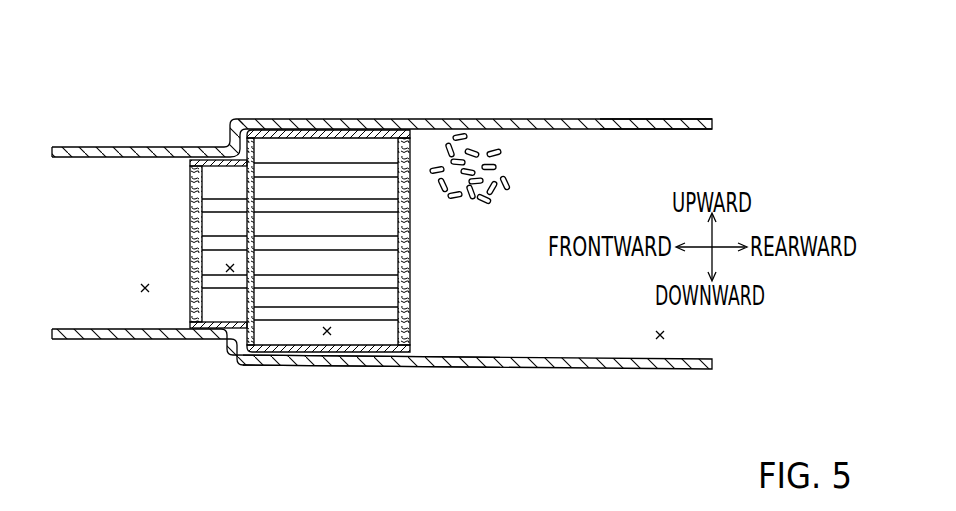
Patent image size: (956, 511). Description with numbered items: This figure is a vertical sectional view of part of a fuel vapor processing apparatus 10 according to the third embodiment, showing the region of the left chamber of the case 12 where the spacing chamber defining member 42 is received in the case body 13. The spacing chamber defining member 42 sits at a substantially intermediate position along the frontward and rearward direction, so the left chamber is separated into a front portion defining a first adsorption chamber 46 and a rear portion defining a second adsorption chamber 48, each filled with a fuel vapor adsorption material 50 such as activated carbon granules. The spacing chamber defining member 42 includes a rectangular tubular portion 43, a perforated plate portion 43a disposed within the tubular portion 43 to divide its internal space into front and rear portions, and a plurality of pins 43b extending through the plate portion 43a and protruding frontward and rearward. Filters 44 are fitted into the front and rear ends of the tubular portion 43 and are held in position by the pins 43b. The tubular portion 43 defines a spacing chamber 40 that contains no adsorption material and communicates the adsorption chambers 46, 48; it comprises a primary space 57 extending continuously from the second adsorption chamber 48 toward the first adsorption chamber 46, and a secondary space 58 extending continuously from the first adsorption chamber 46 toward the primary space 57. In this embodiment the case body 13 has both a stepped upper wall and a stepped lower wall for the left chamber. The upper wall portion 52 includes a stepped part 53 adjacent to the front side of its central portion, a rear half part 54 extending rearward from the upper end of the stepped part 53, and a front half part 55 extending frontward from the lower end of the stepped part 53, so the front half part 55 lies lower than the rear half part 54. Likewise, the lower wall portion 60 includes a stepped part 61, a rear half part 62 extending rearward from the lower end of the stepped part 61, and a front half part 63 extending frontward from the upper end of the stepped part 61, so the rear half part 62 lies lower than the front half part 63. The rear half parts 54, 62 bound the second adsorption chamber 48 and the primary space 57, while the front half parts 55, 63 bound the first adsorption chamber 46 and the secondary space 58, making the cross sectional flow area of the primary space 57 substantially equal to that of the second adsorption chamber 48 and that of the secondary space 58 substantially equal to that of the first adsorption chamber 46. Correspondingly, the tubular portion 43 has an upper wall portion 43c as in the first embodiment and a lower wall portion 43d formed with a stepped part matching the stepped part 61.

The fuel vapor processing apparatus 10 is at (120, 85).
The case 12 is at (102, 130).
The case body 13 is at (590, 116).
The spacing chamber 40 is at (361, 327).
The spacing chamber defining member 42 is at (367, 131).
The tubular portion 43 is at (378, 352).
The plate portion 43a is at (257, 135).
The pins 43b is at (215, 244).
The upper wall portion 43c is at (337, 133).
The lower wall portion 43d is at (288, 350).
The filters 44 is at (195, 203).
The first adsorption chamber 46 is at (145, 290).
The second adsorption chamber 48 is at (660, 338).
The fuel vapor adsorption material 50 is at (505, 153).
The upper wall portion 52 is at (455, 118).
The stepped part 53 is at (230, 136).
The rear half part 54 is at (648, 126).
The front half part 55 is at (157, 150).
The primary space 57 is at (327, 334).
The secondary space 58 is at (229, 272).
The lower wall portion 60 is at (562, 370).
The stepped part 61 is at (222, 362).
The rear half part 62 is at (482, 366).
The front half part 63 is at (93, 340).